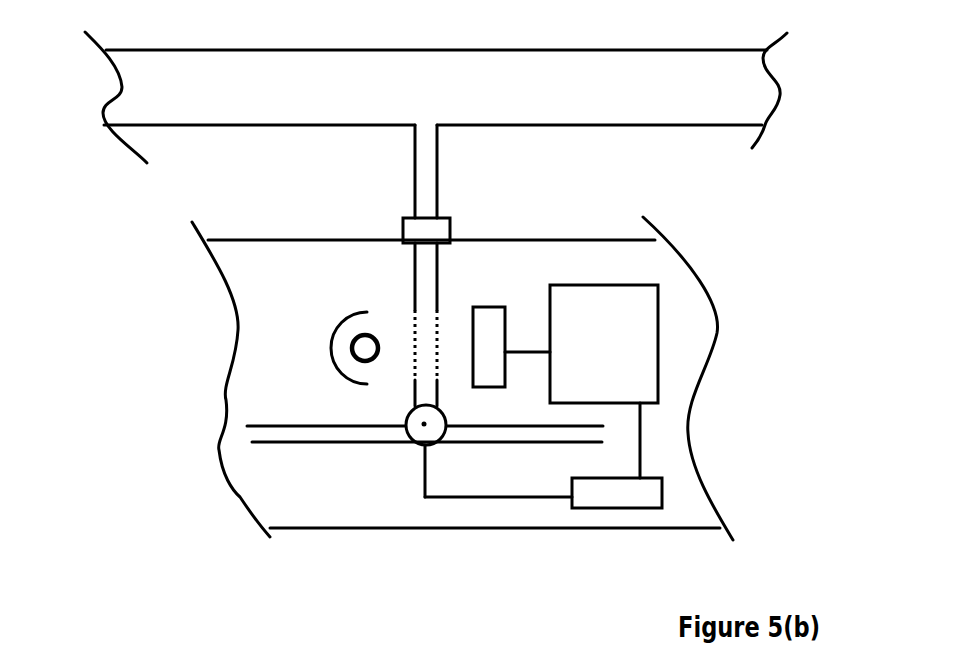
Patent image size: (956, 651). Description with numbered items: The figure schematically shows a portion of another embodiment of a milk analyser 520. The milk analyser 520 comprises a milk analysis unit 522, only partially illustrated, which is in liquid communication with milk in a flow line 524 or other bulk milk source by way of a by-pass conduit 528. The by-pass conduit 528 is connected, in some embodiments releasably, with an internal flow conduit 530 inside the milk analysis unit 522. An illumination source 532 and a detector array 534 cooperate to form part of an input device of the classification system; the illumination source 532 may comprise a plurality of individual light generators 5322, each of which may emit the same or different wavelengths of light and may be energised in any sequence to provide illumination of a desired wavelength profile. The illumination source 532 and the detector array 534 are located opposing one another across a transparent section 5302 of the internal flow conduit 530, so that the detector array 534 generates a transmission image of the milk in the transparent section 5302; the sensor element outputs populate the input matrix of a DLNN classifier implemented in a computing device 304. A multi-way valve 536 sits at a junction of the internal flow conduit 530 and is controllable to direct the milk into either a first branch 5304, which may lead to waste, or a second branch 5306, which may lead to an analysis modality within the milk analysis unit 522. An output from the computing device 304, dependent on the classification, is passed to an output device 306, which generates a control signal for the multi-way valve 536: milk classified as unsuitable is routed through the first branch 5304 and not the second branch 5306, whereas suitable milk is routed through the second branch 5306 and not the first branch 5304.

The milk analyser 520 is at (430, 349).
The milk analysis unit 522 is at (250, 285).
The flow line 524 is at (250, 92).
The by-pass conduit 528 is at (415, 147).
The internal flow conduit 530 is at (415, 272).
The illumination source 532 is at (340, 385).
The detector array 534 is at (485, 305).
The multi-way valve 536 is at (423, 423).
The computing device 304 is at (658, 335).
The output device 306 is at (662, 495).
The transparent section 5302 is at (413, 333).
The first branch 5304 is at (270, 445).
The second branch 5306 is at (530, 442).
The individual light generators 5322 is at (353, 338).